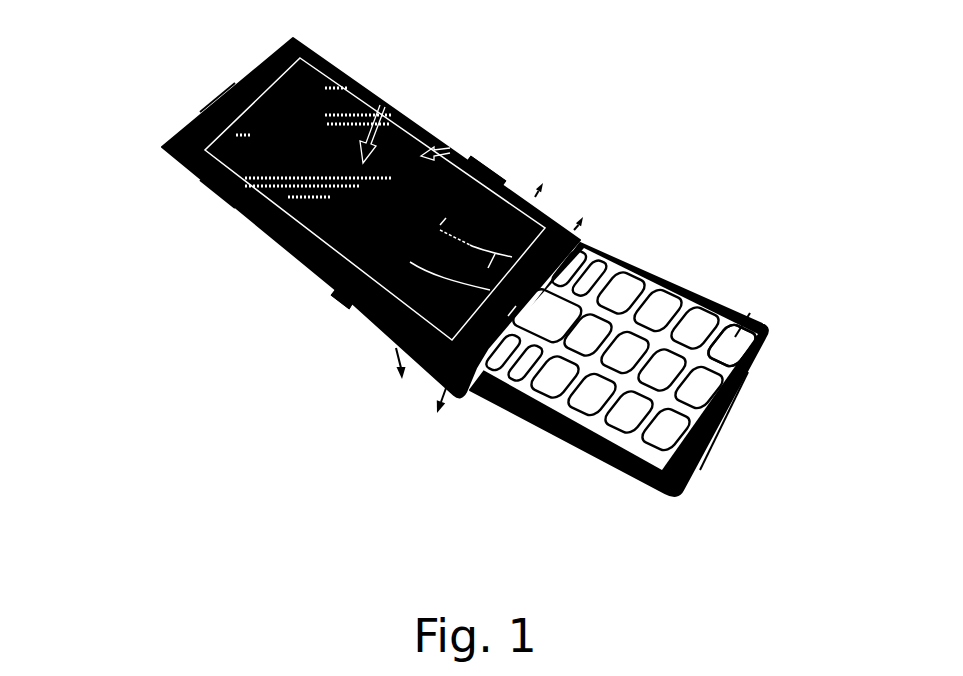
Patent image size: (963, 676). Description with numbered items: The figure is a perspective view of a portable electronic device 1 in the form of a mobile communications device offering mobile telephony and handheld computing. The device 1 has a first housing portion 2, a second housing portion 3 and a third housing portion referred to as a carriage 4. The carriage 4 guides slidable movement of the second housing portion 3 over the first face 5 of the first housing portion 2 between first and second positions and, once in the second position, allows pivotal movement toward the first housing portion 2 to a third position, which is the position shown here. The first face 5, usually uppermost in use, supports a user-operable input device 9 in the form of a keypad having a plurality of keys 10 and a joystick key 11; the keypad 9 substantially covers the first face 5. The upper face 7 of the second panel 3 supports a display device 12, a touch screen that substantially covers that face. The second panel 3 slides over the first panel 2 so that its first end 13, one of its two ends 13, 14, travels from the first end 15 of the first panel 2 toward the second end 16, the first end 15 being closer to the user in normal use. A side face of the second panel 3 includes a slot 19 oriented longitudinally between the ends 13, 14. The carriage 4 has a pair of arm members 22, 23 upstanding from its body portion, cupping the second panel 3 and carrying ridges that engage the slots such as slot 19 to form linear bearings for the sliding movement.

The portable electronic device 1 is at (729, 524).
The first housing portion 2 is at (640, 482).
The second housing portion 3 is at (287, 240).
The carriage 4 is at (390, 343).
The first face 5 is at (618, 310).
The first face of second panel 7 is at (387, 105).
The user-operable input device 9 is at (700, 292).
The keys 10 is at (740, 302).
The joystick key 11 is at (543, 322).
The display device 12 is at (450, 148).
The first end of second panel 13 is at (445, 267).
The second end of second panel 14 is at (203, 94).
The first end of first panel 15 is at (751, 417).
The second end of first panel 16 is at (436, 225).
The slot 19 is at (206, 194).
The arm member 22 is at (350, 313).
The arm member 23 is at (512, 180).